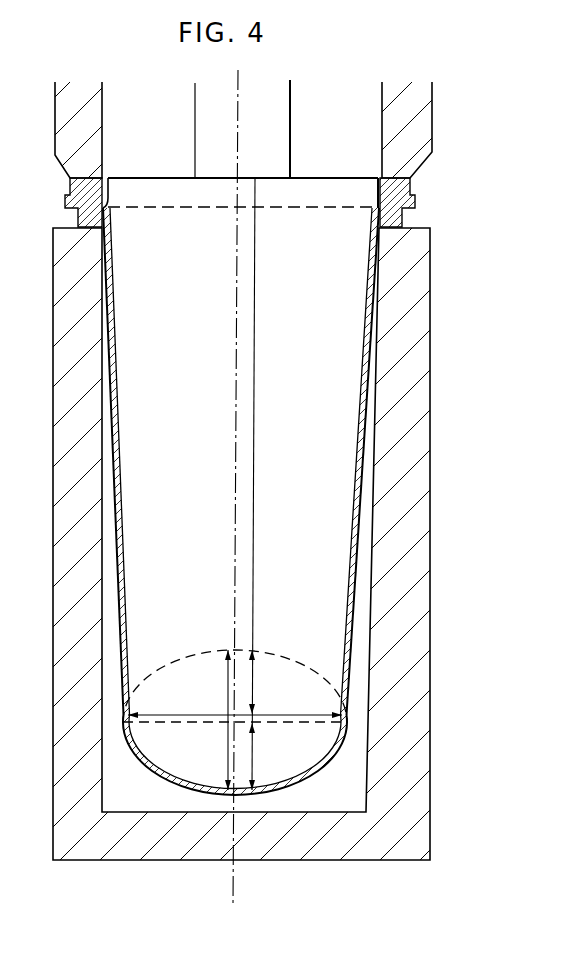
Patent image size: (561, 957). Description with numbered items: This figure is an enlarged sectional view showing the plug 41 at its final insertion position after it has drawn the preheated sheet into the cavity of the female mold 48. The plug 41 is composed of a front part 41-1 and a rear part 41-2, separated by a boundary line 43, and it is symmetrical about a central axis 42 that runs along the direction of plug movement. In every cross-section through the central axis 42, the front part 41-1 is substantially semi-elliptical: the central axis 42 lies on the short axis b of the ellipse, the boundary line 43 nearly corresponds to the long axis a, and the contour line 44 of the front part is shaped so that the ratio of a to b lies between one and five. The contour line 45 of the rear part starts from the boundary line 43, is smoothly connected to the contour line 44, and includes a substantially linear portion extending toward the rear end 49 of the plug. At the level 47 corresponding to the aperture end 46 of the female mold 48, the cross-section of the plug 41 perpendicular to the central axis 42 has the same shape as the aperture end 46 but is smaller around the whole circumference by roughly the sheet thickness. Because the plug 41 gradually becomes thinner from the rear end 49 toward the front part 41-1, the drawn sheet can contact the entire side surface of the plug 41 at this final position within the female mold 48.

The plug 41 is at (350, 352).
The front part of the plug 41-1 is at (200, 770).
The rear part of the plug 41-2 is at (314, 444).
The central axis of the plug 42 is at (237, 301).
The boundary line between the front and rear parts of the plug 43 is at (308, 722).
The contour line of the front part of the plug 44 is at (165, 766).
The contour line of the rear part of the plug 45 is at (352, 518).
The aperture end of the female mold 46 is at (395, 207).
The same height as the aperture end 47 is at (303, 206).
The female mold 48 is at (415, 276).
The rear end of the plug 49 is at (377, 200).
The long axis of ellipse a is at (162, 713).
The short axis of ellipse b is at (228, 683).